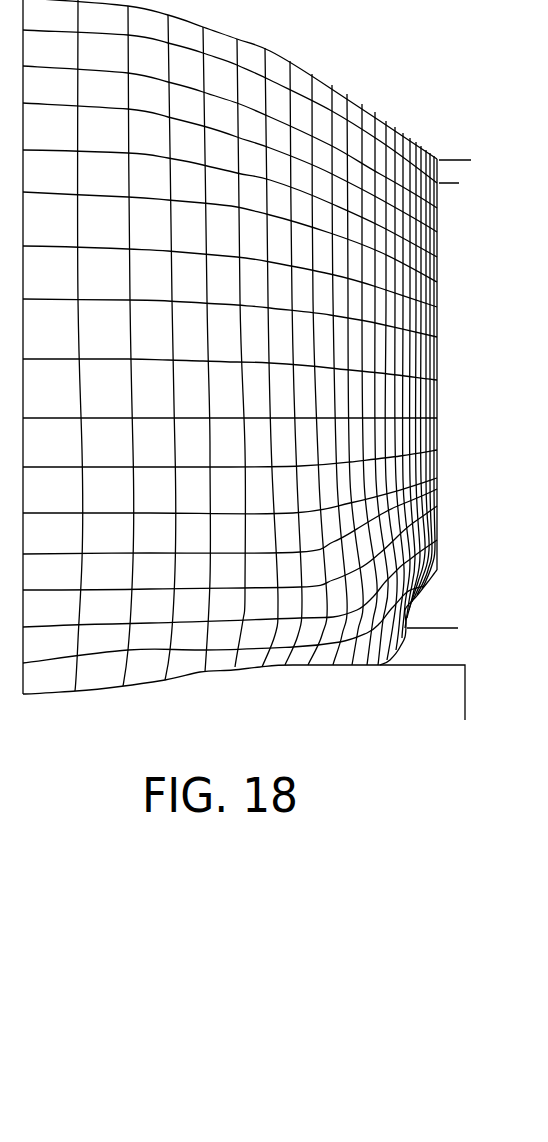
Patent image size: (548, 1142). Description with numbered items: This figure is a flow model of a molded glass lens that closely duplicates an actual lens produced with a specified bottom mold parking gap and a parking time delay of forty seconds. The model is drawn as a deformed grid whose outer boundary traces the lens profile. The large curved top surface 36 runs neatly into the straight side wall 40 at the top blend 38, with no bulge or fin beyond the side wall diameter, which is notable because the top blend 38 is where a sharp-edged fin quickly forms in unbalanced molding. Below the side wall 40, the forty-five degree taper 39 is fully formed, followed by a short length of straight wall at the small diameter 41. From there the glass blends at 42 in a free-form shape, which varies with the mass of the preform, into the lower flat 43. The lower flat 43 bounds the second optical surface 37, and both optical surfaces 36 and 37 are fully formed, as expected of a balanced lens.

The top surface 36 is at (287, 60).
The second optical surface 37 is at (183, 680).
The top blend 38 is at (451, 175).
The 45° taper 39 is at (427, 588).
The side wall 40 is at (439, 370).
The small diameter 41 is at (407, 613).
The blend 42 is at (407, 641).
The lower flat 43 is at (310, 665).